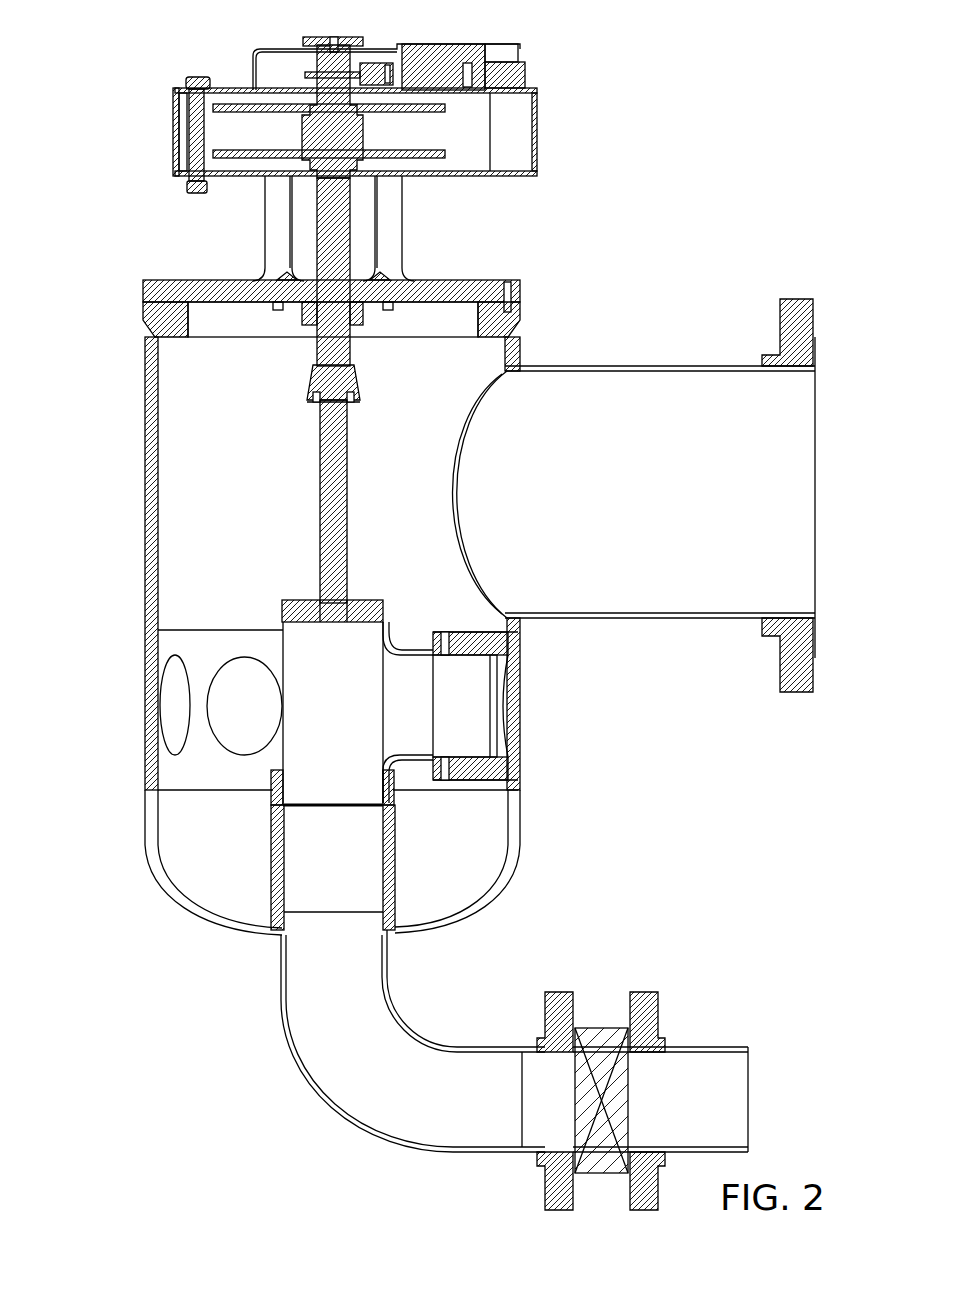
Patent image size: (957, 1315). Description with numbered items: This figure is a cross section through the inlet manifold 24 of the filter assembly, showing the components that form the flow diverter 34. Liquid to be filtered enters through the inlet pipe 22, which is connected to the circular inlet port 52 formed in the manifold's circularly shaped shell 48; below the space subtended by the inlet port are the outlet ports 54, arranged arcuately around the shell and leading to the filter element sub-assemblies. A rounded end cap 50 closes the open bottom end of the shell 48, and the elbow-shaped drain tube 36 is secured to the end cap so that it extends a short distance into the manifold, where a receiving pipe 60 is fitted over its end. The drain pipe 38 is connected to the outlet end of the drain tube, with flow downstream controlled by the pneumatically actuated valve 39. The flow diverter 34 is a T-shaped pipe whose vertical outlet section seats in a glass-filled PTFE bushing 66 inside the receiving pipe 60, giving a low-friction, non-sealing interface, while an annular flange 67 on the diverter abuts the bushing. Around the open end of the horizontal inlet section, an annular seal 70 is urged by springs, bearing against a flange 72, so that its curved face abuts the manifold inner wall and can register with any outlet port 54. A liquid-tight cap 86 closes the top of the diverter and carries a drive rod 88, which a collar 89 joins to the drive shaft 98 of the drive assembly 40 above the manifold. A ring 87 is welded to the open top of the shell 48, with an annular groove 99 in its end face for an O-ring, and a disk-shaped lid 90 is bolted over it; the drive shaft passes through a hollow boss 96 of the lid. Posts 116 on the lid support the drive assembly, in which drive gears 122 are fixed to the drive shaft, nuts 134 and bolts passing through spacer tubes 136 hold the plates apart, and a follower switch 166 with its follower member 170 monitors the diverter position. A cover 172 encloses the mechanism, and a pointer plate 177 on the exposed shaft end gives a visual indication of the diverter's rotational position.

The inlet pipe 22 is at (743, 427).
The inlet manifold 24 is at (631, 320).
The flow diverter 34 is at (265, 580).
The drain tube 36 is at (285, 1022).
The drain pipe 38 is at (722, 1050).
The pneumatically actuated valve 39 is at (660, 995).
The drive assembly 40 is at (620, 175).
The shell 48 is at (224, 471).
The end cap 50 is at (200, 905).
The inlet port 52 is at (512, 448).
The outlet ports 54 is at (180, 676).
The receiving pipe 60 is at (356, 870).
The bushing 66 is at (392, 782).
The annular flange 67 is at (272, 780).
The annular seal 70 is at (470, 640).
The flange 72 is at (432, 660).
The liquid-tight cap 86 is at (365, 602).
The ring 87 is at (178, 328).
The drive rod 88 is at (345, 490).
The collar 89 is at (310, 372).
The lid 90 is at (490, 290).
The hollow boss 96 is at (365, 318).
The drive shaft 98 is at (345, 212).
The annular groove 99 is at (173, 303).
The posts 116 is at (275, 245).
The drive gears 122 is at (412, 148).
The nuts 134 is at (190, 181).
The spacer tubes 136 is at (186, 97).
The follower switch 166 is at (470, 45).
The follower member 170 is at (360, 75).
The cover 172 is at (522, 45).
The pointer plate 177 is at (318, 38).